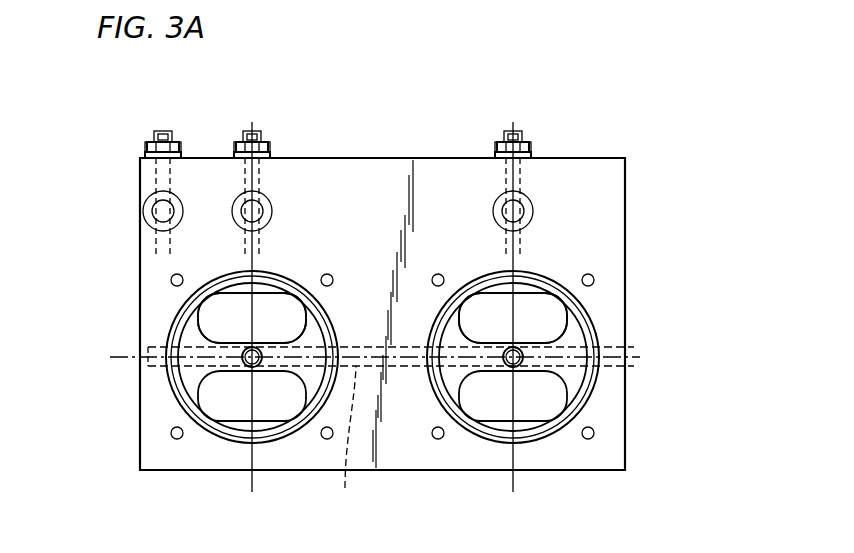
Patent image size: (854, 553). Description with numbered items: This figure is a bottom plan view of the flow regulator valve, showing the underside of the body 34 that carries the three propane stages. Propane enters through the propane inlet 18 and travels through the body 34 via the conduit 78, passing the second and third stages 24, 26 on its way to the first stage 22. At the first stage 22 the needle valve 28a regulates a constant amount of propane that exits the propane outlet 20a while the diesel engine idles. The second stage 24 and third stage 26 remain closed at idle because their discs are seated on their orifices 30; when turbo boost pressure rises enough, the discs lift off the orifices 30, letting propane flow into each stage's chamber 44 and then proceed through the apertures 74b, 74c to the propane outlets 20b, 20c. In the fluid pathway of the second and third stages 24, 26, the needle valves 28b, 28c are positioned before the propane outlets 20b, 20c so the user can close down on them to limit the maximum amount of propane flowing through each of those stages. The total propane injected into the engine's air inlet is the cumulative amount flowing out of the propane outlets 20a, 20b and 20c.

The propane inlet 18 is at (612, 362).
The propane outlet 20a is at (158, 213).
The propane outlet 20b is at (525, 212).
The propane outlet 20c is at (262, 210).
The first stage 22 is at (197, 112).
The second stage 24 is at (623, 112).
The third stage 26 is at (345, 112).
The needle valve 28a is at (146, 150).
The needle valve 28b is at (531, 150).
The needle valve 28c is at (270, 148).
The orifice 30 is at (245, 360).
The body 34 is at (345, 158).
The chamber 44 is at (218, 320).
The aperture 74b is at (515, 294).
The aperture 74c is at (245, 293).
The conduit 78 is at (343, 437).